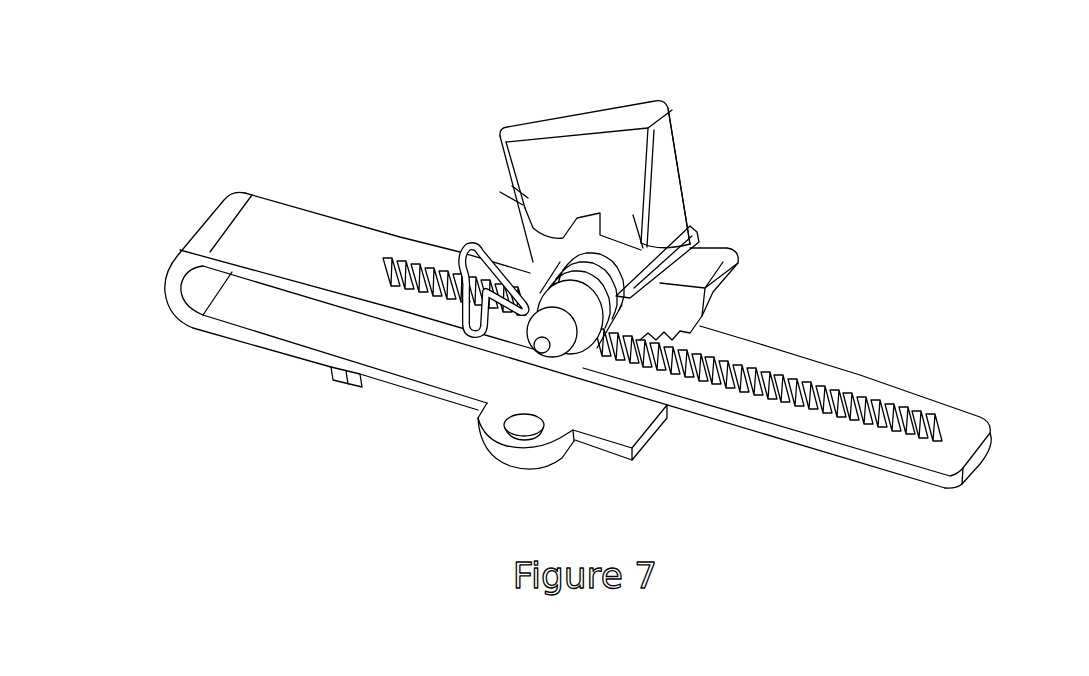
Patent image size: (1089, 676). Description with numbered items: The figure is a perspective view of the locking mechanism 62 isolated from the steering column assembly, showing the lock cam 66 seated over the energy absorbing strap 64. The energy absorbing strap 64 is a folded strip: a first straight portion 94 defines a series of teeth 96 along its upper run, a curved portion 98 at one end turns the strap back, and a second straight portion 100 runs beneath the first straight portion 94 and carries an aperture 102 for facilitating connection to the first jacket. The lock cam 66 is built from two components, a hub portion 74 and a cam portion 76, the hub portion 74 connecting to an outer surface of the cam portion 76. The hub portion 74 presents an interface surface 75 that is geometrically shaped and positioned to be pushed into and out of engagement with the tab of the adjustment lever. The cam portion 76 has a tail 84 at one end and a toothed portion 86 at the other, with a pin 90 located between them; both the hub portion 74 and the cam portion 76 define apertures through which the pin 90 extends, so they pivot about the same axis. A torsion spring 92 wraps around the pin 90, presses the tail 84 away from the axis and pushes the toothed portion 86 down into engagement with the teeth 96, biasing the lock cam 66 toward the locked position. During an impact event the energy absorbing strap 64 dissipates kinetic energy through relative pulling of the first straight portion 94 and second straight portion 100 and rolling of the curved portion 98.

The locking mechanism 62 is at (929, 124).
The energy absorbing strap 64 is at (988, 435).
The lock cam 66 is at (632, 101).
The hub portion 74 is at (557, 138).
The interface surface 75 is at (655, 167).
The cam portion 76 is at (526, 243).
The tail 84 is at (503, 192).
The toothed portion 86 is at (728, 277).
The pin 90 is at (662, 223).
The torsion spring 92 is at (700, 240).
The first straight portion 94 is at (355, 235).
The teeth 96 is at (882, 410).
The curved portion 98 is at (172, 275).
The second straight portion 100 is at (370, 357).
The aperture 102 is at (520, 436).